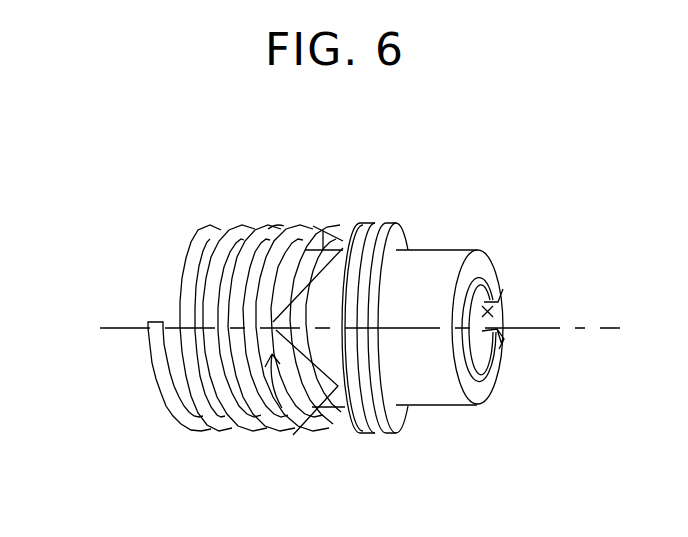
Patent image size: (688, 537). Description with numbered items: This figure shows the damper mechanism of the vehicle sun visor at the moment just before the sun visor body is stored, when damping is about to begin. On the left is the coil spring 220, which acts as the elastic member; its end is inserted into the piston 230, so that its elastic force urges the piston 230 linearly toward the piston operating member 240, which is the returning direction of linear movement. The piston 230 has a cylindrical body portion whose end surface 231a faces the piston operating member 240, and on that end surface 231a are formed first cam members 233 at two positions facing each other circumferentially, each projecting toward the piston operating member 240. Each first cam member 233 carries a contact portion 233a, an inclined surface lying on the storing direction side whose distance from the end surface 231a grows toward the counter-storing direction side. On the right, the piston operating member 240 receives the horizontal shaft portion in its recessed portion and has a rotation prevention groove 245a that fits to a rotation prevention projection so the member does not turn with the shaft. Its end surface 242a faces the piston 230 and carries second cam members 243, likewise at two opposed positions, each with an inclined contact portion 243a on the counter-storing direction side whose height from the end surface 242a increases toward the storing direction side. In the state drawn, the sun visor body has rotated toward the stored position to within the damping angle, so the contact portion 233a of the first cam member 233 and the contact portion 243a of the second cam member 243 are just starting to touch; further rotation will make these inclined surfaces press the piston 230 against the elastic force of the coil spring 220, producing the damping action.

The coil spring 220 is at (131, 411).
The piston 230 is at (207, 201).
The end surface 231a is at (312, 228).
The first cam member 233 is at (295, 418).
The contact portion 233a is at (293, 260).
The piston operating member 240 is at (498, 212).
The end surface 242a is at (349, 425).
The second cam member 243 is at (320, 295).
The contact portion 243a is at (315, 370).
The rotation prevention groove 245a is at (494, 312).